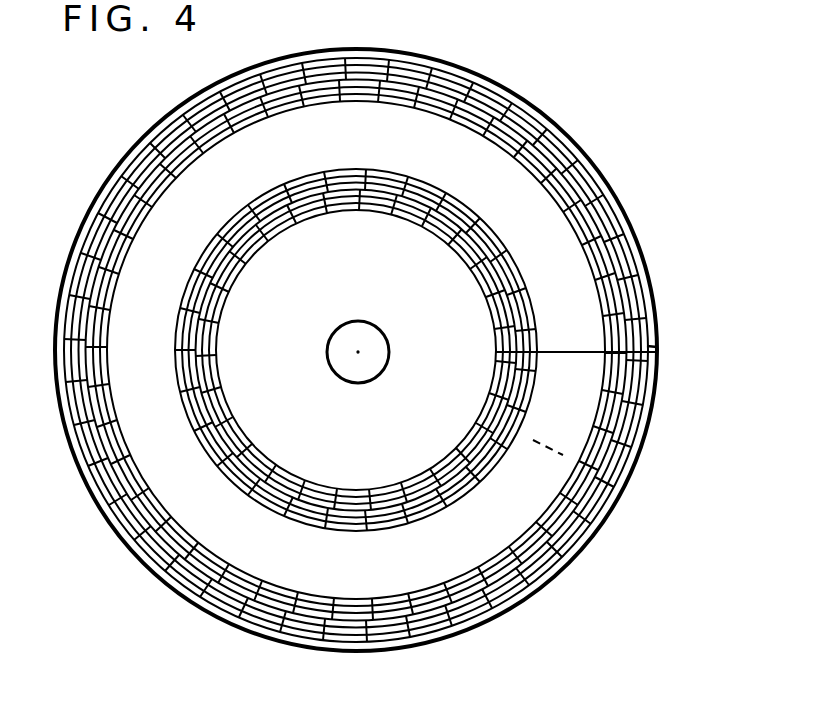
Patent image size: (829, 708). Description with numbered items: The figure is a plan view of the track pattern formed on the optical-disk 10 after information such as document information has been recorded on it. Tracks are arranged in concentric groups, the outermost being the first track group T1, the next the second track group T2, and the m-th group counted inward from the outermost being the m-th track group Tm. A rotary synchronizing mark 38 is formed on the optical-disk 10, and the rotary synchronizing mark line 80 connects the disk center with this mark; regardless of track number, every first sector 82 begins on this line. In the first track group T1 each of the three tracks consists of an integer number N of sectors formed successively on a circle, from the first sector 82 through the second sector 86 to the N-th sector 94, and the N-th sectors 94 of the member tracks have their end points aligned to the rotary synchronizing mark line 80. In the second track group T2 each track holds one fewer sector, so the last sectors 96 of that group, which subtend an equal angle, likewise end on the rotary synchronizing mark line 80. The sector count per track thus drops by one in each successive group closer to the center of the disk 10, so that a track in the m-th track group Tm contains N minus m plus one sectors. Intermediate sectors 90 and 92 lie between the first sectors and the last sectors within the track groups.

The optical-disk 10 is at (543, 110).
The outer track zone 90 is at (641, 247).
The track 92 is at (643, 282).
The N-th sector 94 is at (643, 330).
The (N-1)th sector 96 is at (611, 343).
The rotary synchronizing mark 38 is at (655, 349).
The rotary synchronizing mark line 80 is at (584, 353).
The first sector 82 is at (647, 381).
The second sector 86 is at (653, 416).
The first track group T1 is at (182, 597).
The second track group T2 is at (200, 551).
The m-th track group Tm is at (330, 532).